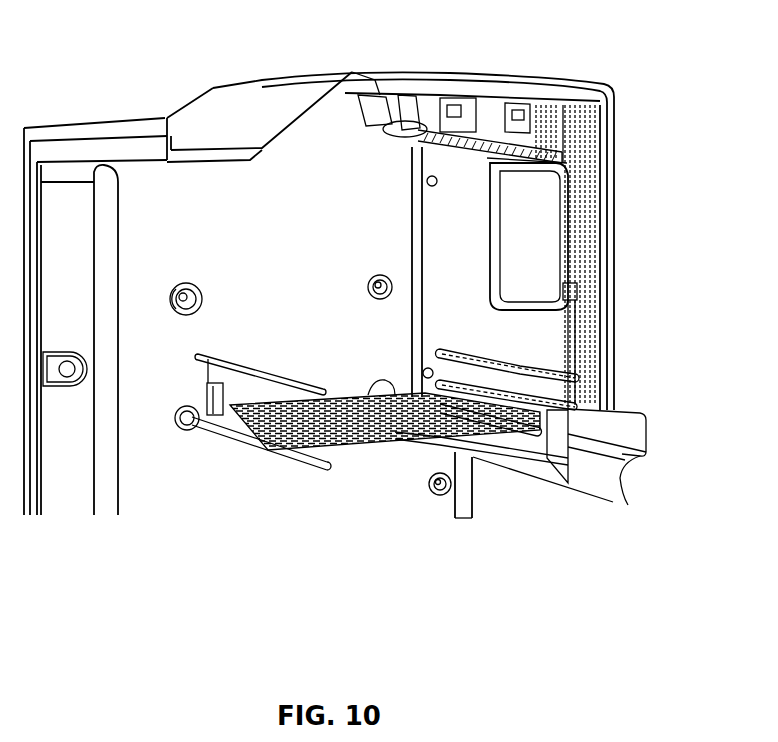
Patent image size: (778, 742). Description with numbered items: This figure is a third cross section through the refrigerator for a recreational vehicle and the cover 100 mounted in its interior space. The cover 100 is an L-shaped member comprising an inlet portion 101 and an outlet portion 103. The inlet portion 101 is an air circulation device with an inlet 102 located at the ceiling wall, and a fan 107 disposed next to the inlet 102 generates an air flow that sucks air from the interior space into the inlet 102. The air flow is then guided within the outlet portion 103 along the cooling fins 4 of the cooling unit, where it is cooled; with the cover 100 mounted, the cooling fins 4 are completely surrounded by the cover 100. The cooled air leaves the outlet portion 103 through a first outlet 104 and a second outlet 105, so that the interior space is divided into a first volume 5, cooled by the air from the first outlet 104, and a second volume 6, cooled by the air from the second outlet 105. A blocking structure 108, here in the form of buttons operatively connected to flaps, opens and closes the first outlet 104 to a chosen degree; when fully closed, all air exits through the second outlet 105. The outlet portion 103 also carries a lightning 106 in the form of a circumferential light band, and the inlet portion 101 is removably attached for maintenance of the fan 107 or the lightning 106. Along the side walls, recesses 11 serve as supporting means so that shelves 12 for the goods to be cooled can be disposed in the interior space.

The cooling fins 4 is at (598, 130).
The first volume 5 is at (248, 237).
The second volume 6 is at (440, 528).
The recesses 11 is at (175, 292).
The shelves 12 is at (280, 455).
The cover 100 is at (432, 313).
The inlet portion 101 is at (538, 225).
The inlet 102 is at (440, 150).
The outlet portion 103 is at (452, 282).
The first outlet 104 is at (546, 455).
The second outlet 105 is at (600, 470).
The lightning 106 is at (547, 307).
The fan 107 is at (482, 123).
The blocking structure 108 is at (424, 368).